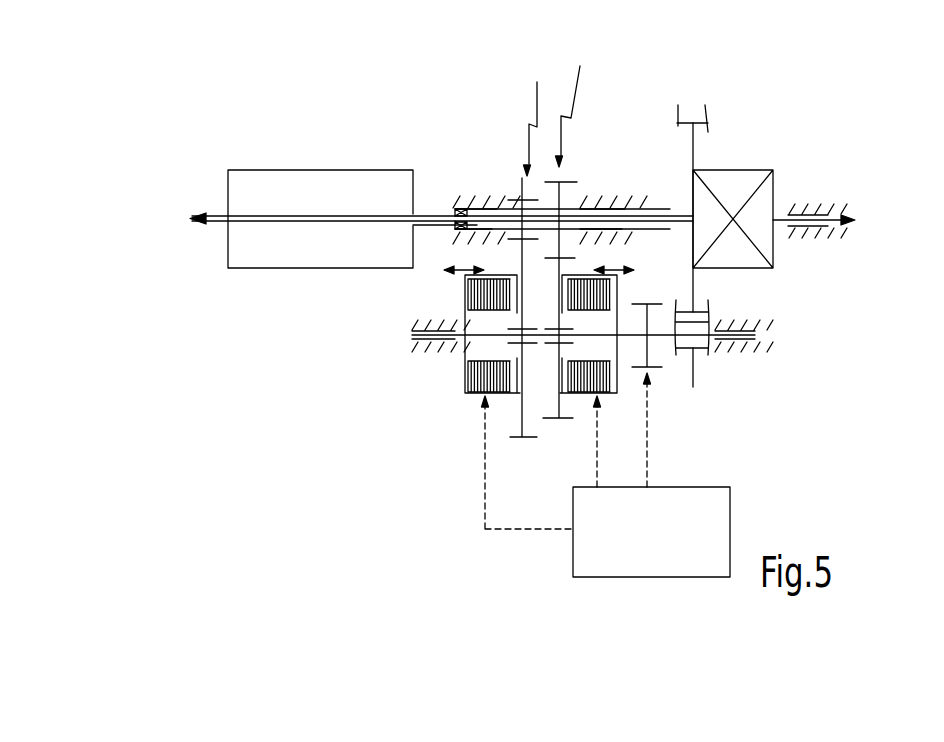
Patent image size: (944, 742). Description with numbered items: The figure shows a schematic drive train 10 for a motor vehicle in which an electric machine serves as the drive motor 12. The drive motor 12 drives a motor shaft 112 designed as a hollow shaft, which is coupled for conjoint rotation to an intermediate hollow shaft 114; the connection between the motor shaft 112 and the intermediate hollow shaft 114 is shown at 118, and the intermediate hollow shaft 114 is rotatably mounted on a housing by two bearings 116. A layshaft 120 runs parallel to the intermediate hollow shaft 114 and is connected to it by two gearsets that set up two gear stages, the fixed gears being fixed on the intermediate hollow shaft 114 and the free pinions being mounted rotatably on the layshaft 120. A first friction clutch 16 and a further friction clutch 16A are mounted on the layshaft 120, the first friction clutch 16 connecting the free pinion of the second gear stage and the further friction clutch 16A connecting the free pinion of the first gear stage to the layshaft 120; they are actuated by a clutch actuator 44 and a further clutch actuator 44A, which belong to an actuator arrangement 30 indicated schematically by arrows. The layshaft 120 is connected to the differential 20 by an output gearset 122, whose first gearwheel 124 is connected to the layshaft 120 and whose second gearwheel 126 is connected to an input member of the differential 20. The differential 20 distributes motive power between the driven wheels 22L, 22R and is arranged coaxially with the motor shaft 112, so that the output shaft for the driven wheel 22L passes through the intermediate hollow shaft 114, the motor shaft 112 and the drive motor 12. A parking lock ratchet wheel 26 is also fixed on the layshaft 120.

The drive train 10 is at (773, 103).
The drive motor 12 is at (266, 270).
The first friction clutch 16 is at (602, 398).
The further friction clutch 16A is at (476, 398).
The differential 20 is at (740, 170).
The driven wheel 22L is at (208, 222).
The driven wheel 22R is at (836, 226).
The parking lock ratchet wheel 26 is at (650, 356).
The actuator arrangement 30 is at (572, 550).
The clutch actuator 44 is at (616, 270).
The further clutch actuator 44A is at (445, 270).
The motor shaft 112 is at (436, 208).
The intermediate hollow shaft 114 is at (651, 190).
The bearings 116 is at (477, 196).
The connection 118 is at (456, 208).
The layshaft 120 is at (460, 360).
The output gearset 122 is at (720, 308).
The first gearwheel 124 is at (711, 378).
The second gearwheel 126 is at (696, 152).